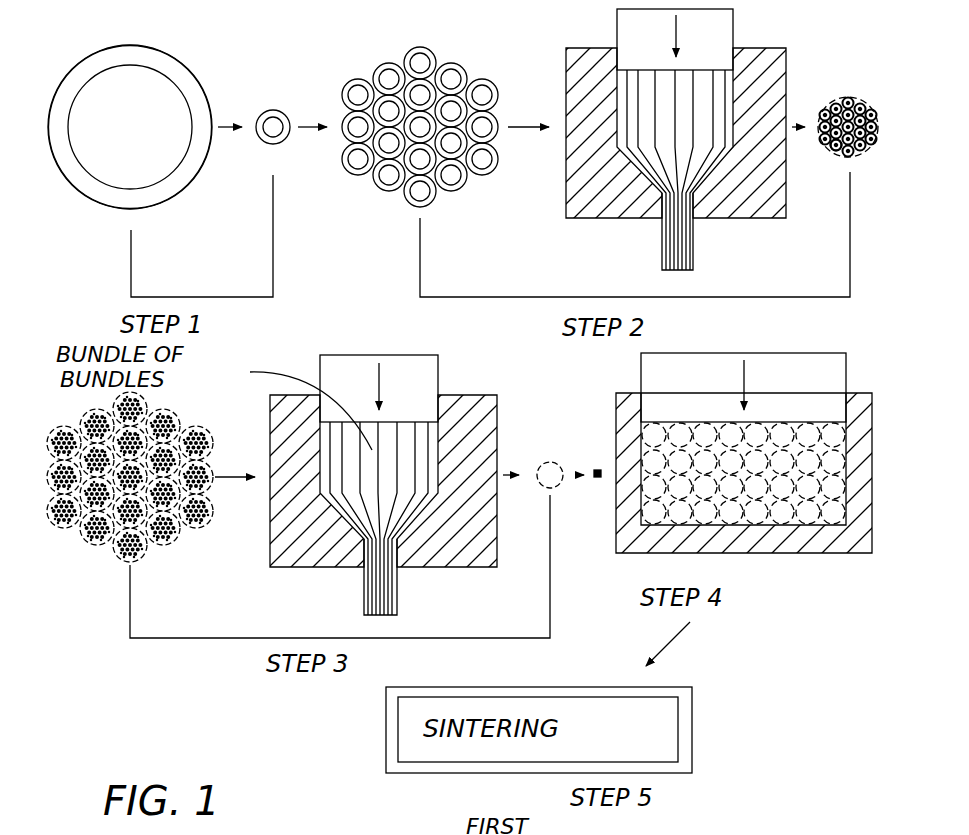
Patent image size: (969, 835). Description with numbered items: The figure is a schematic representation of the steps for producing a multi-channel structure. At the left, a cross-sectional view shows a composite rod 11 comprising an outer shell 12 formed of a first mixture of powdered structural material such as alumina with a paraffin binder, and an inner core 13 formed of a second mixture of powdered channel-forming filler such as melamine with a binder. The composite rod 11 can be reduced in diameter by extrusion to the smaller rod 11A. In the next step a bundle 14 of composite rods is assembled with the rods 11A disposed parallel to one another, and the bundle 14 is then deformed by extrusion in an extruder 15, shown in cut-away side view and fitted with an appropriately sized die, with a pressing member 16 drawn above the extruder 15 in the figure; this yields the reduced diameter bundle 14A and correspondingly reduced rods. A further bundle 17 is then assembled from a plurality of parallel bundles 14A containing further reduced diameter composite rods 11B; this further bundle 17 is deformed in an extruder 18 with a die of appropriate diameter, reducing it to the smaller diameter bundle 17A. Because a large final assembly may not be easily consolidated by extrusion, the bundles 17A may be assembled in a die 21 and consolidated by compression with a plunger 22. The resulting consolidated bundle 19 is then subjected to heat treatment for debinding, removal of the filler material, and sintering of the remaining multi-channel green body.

The composite rod 11 is at (81, 207).
The reduced diameter composite rod 11A is at (273, 86).
The further reduced diameter composite rod 11B is at (837, 150).
The outer shell 12 is at (113, 62).
The inner core 13 is at (133, 162).
The bundle 14 is at (374, 206).
The reduced diameter bundle 14A is at (848, 80).
The extruder 15 is at (738, 187).
The piston 16 is at (643, 27).
The further bundle 17 is at (84, 556).
The smaller diameter further bundle 17A is at (550, 461).
The extruder 18 is at (467, 437).
The consolidated bundle 19 is at (808, 430).
The die 21 is at (803, 535).
The plunger 22 is at (812, 390).